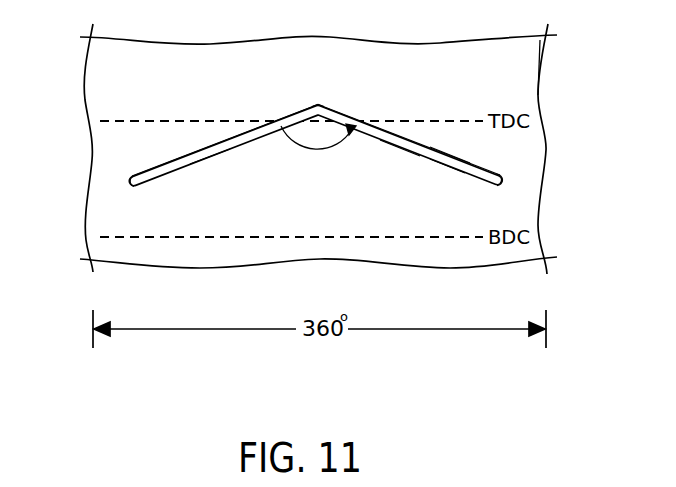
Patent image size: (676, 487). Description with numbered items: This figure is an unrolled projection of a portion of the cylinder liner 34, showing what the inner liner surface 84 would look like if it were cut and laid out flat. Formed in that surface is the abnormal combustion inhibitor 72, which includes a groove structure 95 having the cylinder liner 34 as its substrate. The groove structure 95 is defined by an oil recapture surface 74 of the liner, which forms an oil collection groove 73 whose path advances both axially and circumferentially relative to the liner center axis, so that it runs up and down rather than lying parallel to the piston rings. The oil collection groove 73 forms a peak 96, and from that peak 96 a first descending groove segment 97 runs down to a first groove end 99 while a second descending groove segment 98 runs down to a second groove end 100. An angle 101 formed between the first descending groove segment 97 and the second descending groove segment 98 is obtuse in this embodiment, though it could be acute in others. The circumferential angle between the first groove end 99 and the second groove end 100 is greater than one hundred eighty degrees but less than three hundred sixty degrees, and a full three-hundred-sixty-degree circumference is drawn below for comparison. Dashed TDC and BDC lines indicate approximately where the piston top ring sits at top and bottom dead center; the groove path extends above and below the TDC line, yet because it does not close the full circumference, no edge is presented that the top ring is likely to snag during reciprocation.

The cylinder liner 34 is at (583, 112).
The abnormal combustion inhibitor 72 is at (503, 164).
The oil collection groove 73 is at (222, 141).
The oil recapture surface 74 is at (450, 167).
The inner liner surface 84 is at (522, 70).
The groove structure 95 is at (455, 148).
The peak 96 is at (318, 104).
The first descending groove segment 97 is at (228, 151).
The second descending groove segment 98 is at (404, 150).
The first groove end 99 is at (133, 183).
The second groove end 100 is at (503, 185).
The angle 101 is at (317, 152).